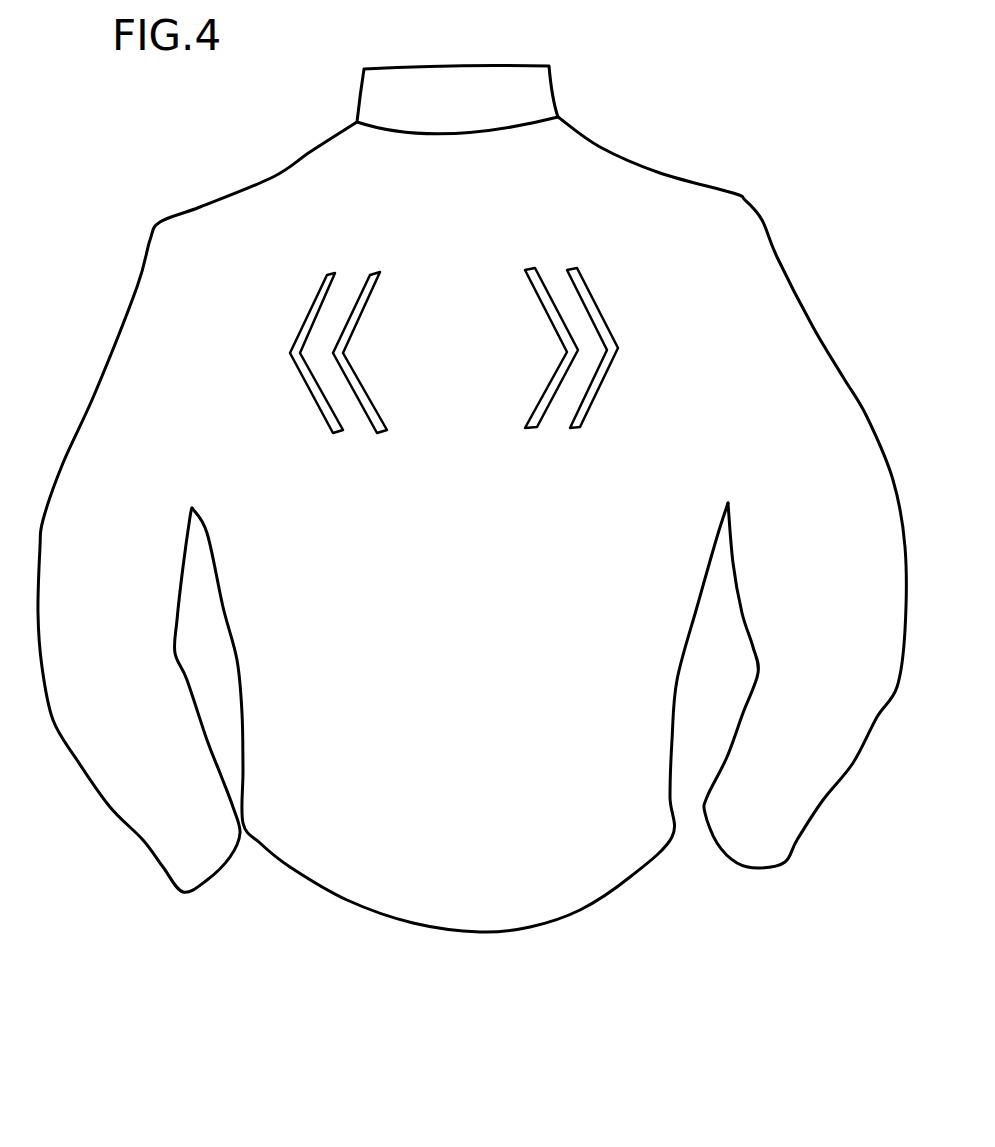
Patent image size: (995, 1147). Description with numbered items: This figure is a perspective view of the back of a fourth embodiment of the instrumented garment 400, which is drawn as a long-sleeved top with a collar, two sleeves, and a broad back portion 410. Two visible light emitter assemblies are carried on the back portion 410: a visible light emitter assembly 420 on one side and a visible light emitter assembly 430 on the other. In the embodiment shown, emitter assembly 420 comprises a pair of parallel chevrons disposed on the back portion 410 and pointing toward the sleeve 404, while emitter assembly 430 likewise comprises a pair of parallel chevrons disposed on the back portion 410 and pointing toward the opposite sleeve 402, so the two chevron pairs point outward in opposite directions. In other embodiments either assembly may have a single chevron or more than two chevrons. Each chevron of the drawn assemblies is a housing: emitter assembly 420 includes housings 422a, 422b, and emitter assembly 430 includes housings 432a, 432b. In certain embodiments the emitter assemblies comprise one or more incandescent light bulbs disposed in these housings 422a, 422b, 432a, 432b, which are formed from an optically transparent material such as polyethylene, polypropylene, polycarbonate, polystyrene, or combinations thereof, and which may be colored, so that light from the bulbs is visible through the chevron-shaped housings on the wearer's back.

The garment 400 is at (470, 508).
The sleeve 402 is at (818, 455).
The sleeve 404 is at (85, 483).
The back portion 410 is at (498, 202).
The visible light emitter assembly 420 is at (362, 393).
The housing 422a is at (337, 278).
The housing 422b is at (377, 292).
The visible light emitter assembly 430 is at (549, 378).
The housing 432a is at (530, 292).
The housing 432b is at (567, 275).